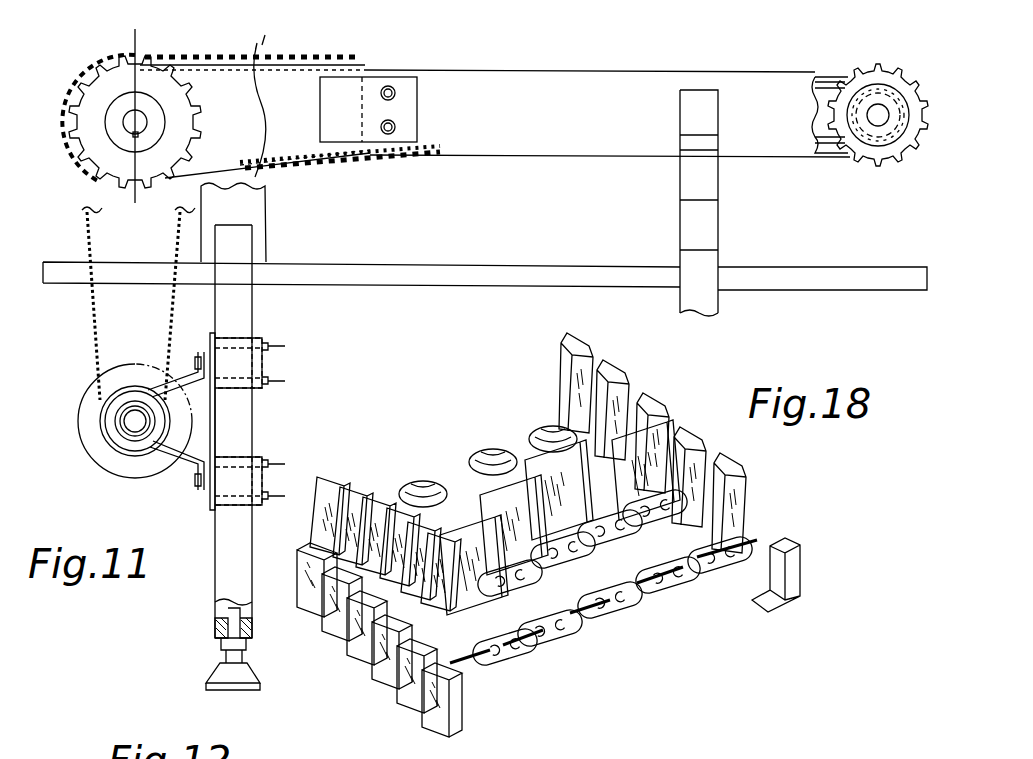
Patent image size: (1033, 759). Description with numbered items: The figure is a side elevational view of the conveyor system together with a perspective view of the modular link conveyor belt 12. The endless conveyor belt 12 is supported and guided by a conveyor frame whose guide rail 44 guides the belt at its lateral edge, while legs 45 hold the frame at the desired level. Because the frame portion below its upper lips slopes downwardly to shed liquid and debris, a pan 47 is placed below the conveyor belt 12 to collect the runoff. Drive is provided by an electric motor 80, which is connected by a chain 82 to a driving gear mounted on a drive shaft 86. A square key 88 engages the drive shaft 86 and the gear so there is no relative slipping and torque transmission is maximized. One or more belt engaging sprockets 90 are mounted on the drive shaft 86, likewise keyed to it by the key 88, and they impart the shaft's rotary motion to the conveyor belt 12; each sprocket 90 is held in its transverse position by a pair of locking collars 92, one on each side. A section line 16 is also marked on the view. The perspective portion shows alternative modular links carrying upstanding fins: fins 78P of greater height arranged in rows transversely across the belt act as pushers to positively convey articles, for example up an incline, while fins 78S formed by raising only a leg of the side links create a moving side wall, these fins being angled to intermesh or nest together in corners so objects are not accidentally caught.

In FIG. 11, the conveyor belt 12 is at (366, 42).
In FIG. 11, the section line 16- 16 is at (135, 29).
In FIG. 11, the guide rail 44 is at (560, 104).
In FIG. 11, the legs 45 is at (213, 578).
In FIG. 11, the pan 47 is at (452, 285).
In FIG. 11, the electric motor 80 is at (103, 470).
In FIG. 11, the chain 82 is at (98, 352).
In FIG. 11, the drive shaft 86 is at (127, 119).
In FIG. 11, the square key 88 is at (134, 136).
In FIG. 11, the conveyor belt engaging sprocket 90 is at (118, 166).
In FIG. 11, the locking collar 92 is at (128, 100).
In FIG. 18, the fins 78S is at (567, 335).
In FIG. 18, the fins 78P is at (637, 543).